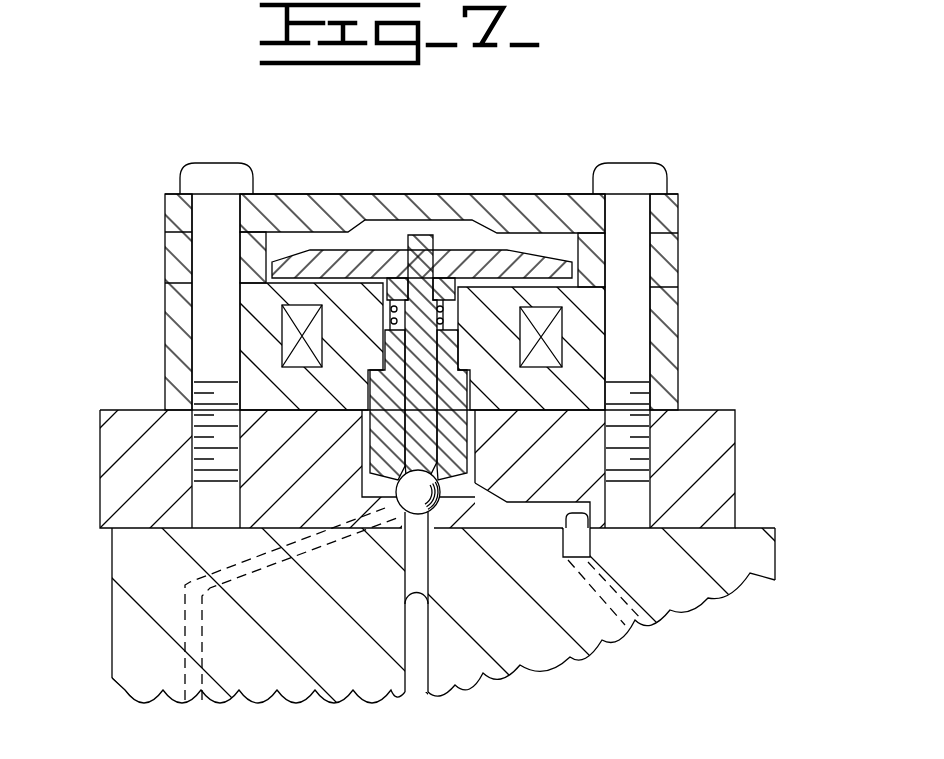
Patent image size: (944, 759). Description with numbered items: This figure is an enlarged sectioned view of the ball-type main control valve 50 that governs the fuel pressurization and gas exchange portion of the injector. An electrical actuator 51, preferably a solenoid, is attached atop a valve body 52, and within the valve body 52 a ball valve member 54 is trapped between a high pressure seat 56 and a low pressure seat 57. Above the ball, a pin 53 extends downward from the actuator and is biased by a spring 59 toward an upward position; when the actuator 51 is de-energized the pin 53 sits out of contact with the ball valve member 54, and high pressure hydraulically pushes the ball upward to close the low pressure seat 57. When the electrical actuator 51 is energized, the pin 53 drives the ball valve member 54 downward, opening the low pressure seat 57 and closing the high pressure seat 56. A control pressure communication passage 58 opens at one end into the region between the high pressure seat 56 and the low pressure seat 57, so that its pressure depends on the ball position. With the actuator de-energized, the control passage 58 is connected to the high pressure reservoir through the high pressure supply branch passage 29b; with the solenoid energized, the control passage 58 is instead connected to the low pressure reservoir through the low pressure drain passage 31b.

The main control valve 50 is at (690, 165).
The electrical actuator 51 is at (310, 250).
The valve body 52 is at (735, 486).
The pin 53 is at (455, 365).
The low pressure drain passage 31b is at (450, 403).
The ball valve member 54 is at (490, 505).
The high pressure seat 56 is at (440, 526).
The low pressure seat 57 is at (396, 492).
The control pressure communication passage 58 is at (577, 555).
The spring 59 is at (448, 310).
The high pressure supply branch passage 29b is at (405, 604).